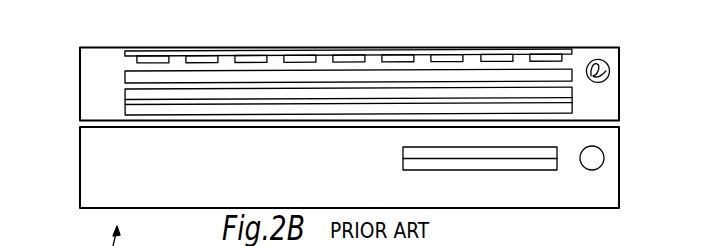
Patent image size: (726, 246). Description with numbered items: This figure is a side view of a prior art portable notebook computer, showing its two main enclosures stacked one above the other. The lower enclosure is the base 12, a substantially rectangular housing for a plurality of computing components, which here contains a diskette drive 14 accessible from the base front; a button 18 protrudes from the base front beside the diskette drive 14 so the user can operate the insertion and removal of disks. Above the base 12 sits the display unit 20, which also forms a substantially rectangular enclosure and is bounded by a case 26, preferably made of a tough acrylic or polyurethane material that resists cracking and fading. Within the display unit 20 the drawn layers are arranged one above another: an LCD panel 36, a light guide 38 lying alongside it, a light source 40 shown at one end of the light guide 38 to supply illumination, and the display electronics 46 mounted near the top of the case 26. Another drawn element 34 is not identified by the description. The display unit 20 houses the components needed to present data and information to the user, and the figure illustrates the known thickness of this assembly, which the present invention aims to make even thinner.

The base 12 is at (82, 170).
The diskette drive 14 is at (403, 169).
The button 18 is at (604, 156).
The display unit 20 is at (90, 76).
The case 26 is at (575, 112).
The strip 34 is at (330, 50).
The LCD panel 36 is at (558, 99).
The light guide 38 is at (565, 78).
The light source 40 is at (606, 69).
The display electronics 46 is at (534, 33).